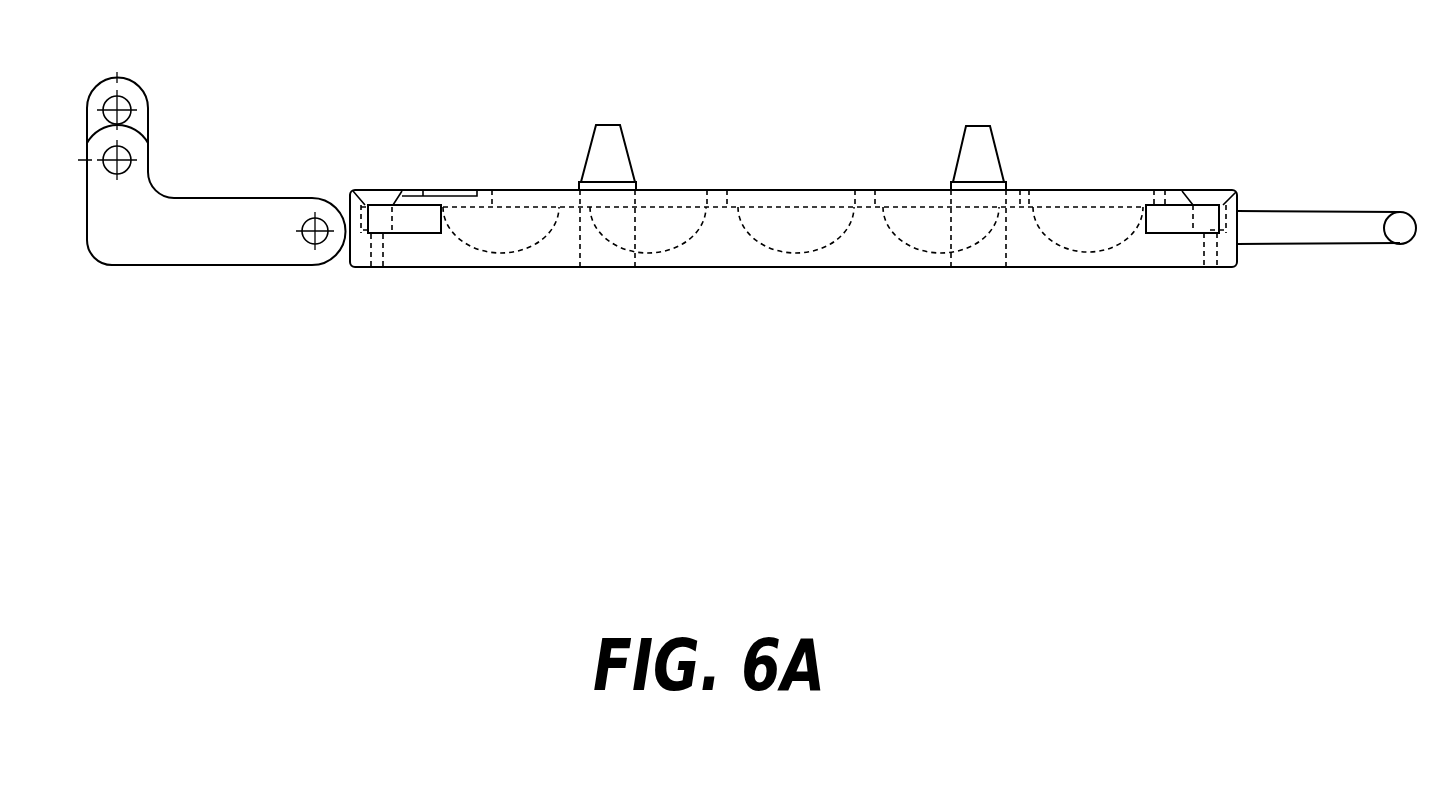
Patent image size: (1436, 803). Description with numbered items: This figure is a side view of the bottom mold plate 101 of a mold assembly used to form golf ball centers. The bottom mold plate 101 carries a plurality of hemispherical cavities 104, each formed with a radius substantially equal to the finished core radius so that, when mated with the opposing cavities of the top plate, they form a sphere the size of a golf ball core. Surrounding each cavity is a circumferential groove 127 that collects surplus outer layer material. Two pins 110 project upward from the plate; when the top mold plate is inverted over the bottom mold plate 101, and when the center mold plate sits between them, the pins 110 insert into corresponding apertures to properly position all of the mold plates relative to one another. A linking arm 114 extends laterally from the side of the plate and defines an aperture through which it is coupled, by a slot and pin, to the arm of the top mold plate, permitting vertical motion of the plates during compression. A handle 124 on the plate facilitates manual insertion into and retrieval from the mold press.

The bottom mold plate 101 is at (825, 90).
The cavities 104 is at (515, 198).
The pins 110 is at (628, 160).
The linking arms 114 is at (202, 198).
The handles 124 is at (1300, 246).
The circumferential groove 127 is at (573, 200).